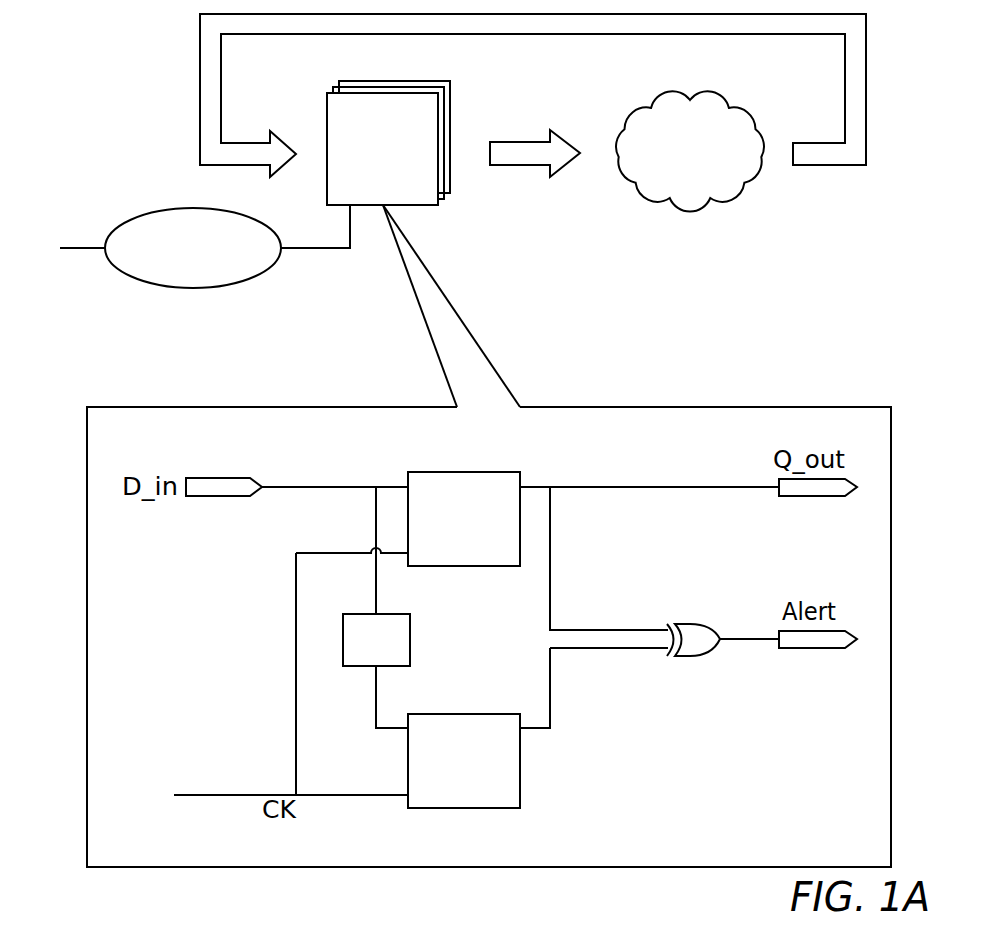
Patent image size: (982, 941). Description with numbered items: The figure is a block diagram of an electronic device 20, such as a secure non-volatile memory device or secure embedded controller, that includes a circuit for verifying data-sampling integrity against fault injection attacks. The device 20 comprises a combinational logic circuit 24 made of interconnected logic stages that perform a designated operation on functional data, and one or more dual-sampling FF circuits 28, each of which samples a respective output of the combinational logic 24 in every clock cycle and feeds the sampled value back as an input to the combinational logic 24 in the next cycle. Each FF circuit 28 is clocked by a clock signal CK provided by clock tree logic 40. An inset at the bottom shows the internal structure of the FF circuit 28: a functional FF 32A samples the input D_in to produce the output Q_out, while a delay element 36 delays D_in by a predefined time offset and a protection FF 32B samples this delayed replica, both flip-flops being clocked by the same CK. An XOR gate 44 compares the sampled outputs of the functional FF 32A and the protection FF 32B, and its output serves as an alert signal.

The electronic device 20 is at (118, 32).
The combinational logic circuit 24 is at (690, 212).
The dual-sampling FF circuit 28 is at (448, 192).
The functional FF 32A is at (465, 471).
The protection FF 32B is at (462, 809).
The delay element 36 is at (411, 645).
The clock tree logic 40 is at (192, 289).
The XOR gate 44 is at (697, 657).